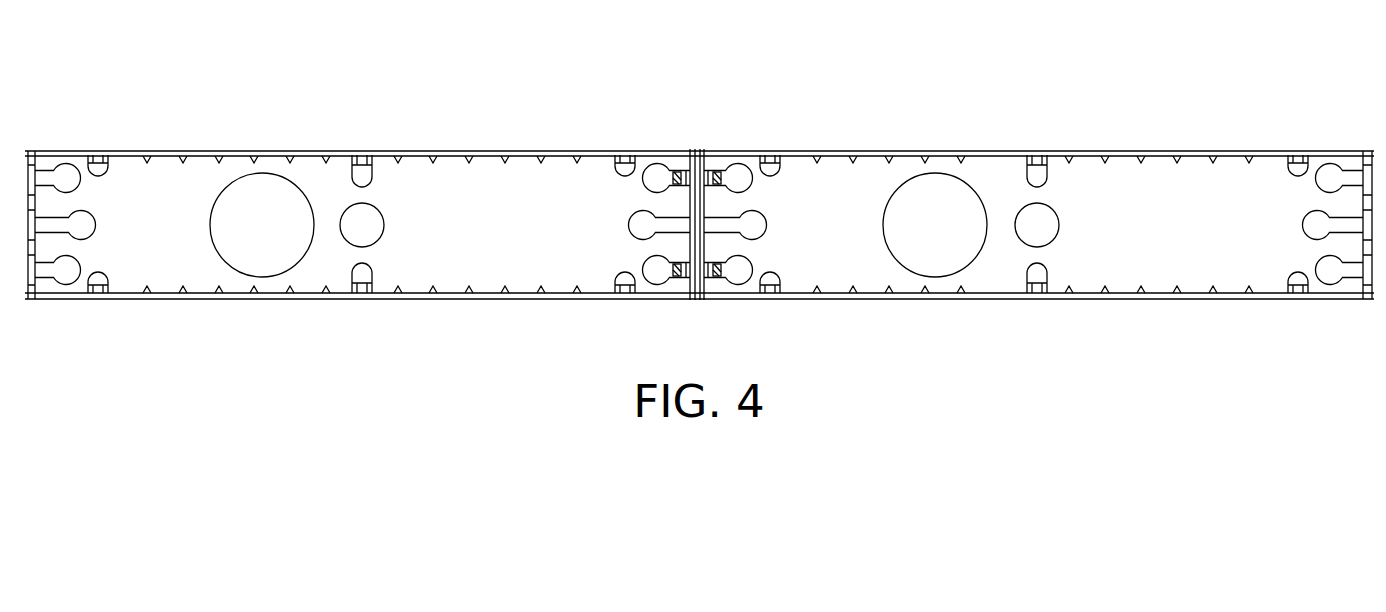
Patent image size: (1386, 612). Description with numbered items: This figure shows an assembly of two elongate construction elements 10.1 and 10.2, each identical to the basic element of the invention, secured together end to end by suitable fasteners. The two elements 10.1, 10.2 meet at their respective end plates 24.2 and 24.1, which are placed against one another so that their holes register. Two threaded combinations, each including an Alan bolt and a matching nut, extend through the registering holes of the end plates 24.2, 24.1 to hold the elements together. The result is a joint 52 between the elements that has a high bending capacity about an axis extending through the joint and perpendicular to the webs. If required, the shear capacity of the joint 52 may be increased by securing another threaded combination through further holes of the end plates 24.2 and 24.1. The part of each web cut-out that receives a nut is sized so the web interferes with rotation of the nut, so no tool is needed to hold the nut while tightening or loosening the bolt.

The elongate construction element 10.1 is at (411, 134).
The elongate construction element 10.2 is at (983, 134).
The end plate 24.1 is at (704, 150).
The end plate 24.2 is at (690, 150).
The joint 52 is at (699, 306).